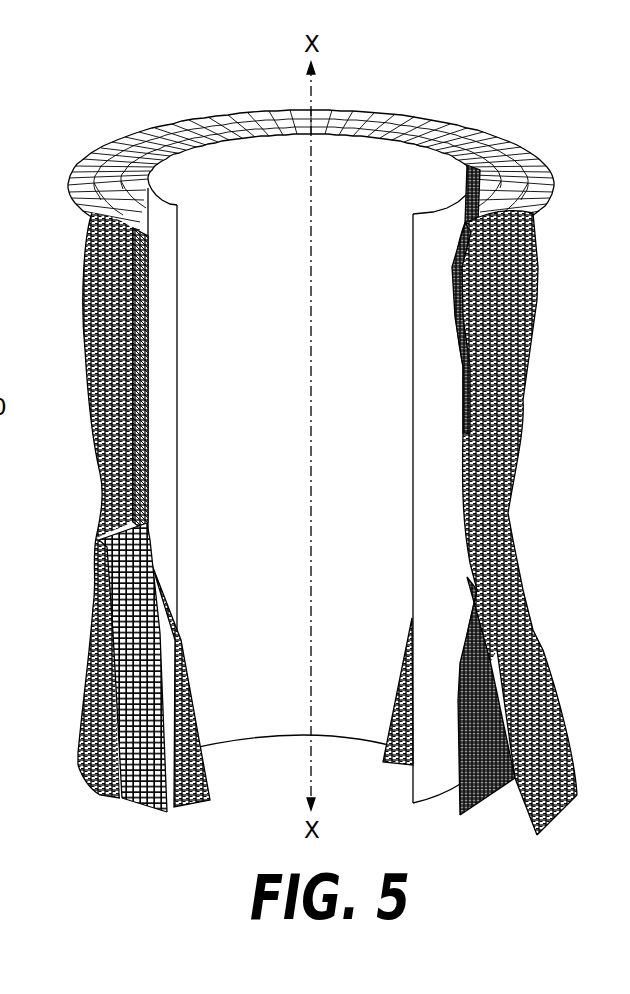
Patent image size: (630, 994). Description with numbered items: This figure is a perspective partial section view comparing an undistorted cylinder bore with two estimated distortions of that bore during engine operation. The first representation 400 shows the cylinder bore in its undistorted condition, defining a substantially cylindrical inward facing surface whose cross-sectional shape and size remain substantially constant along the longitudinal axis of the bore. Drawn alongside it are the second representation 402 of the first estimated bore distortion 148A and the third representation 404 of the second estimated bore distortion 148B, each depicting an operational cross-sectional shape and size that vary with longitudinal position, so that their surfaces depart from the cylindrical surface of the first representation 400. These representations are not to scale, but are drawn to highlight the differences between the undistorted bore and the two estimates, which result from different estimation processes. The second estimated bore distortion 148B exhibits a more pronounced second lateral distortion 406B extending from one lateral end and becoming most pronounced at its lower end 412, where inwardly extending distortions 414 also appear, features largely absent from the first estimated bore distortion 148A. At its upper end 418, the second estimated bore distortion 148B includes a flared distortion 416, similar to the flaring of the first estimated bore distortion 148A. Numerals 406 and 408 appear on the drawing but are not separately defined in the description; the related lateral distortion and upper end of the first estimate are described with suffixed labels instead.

The first representation 400 is at (177, 208).
The second representation 402 is at (142, 802).
The third representation 404 is at (73, 767).
The band strand 406 is at (577, 800).
The second lateral distortion 406B is at (66, 375).
The band edge 408 is at (147, 277).
The lower end 412 is at (97, 793).
The inwardly extending distortions 414 is at (197, 722).
The flared distortion 416 is at (90, 250).
The upper end 418 is at (88, 213).
The first estimated bore distortion 148A is at (163, 813).
The second estimated bore distortion 148B is at (82, 740).